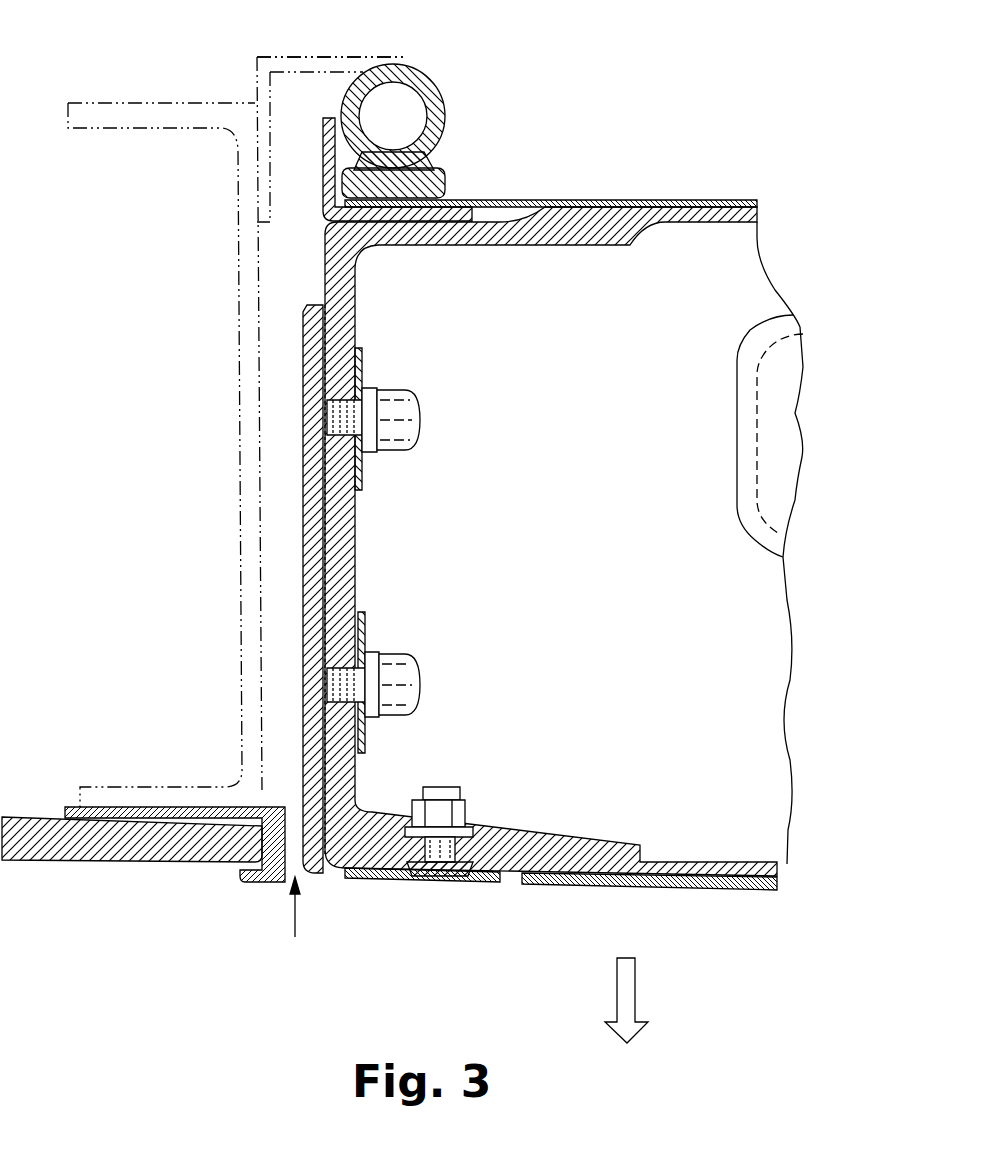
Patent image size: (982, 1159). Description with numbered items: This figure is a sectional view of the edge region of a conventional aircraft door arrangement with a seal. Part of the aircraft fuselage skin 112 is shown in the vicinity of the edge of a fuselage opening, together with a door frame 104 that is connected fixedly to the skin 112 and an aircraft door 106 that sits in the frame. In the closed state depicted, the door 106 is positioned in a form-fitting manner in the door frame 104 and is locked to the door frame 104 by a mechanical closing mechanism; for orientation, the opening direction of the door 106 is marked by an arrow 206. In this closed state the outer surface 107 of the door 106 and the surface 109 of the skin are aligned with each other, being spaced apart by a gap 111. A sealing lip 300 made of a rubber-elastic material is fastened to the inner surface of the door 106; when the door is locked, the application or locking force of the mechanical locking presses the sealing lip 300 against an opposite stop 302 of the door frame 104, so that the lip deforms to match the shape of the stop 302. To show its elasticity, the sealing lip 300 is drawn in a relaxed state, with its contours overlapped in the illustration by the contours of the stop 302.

The door frame 104 is at (160, 103).
The stop 302 is at (403, 62).
The sealing lip 300 is at (446, 100).
The aircraft door 106 is at (645, 205).
The outer surface 107 is at (367, 880).
The surface of the skin 109 is at (200, 870).
The gap 111 is at (296, 926).
The aircraft fuselage skin 112 is at (100, 848).
The arrow 206 is at (630, 993).